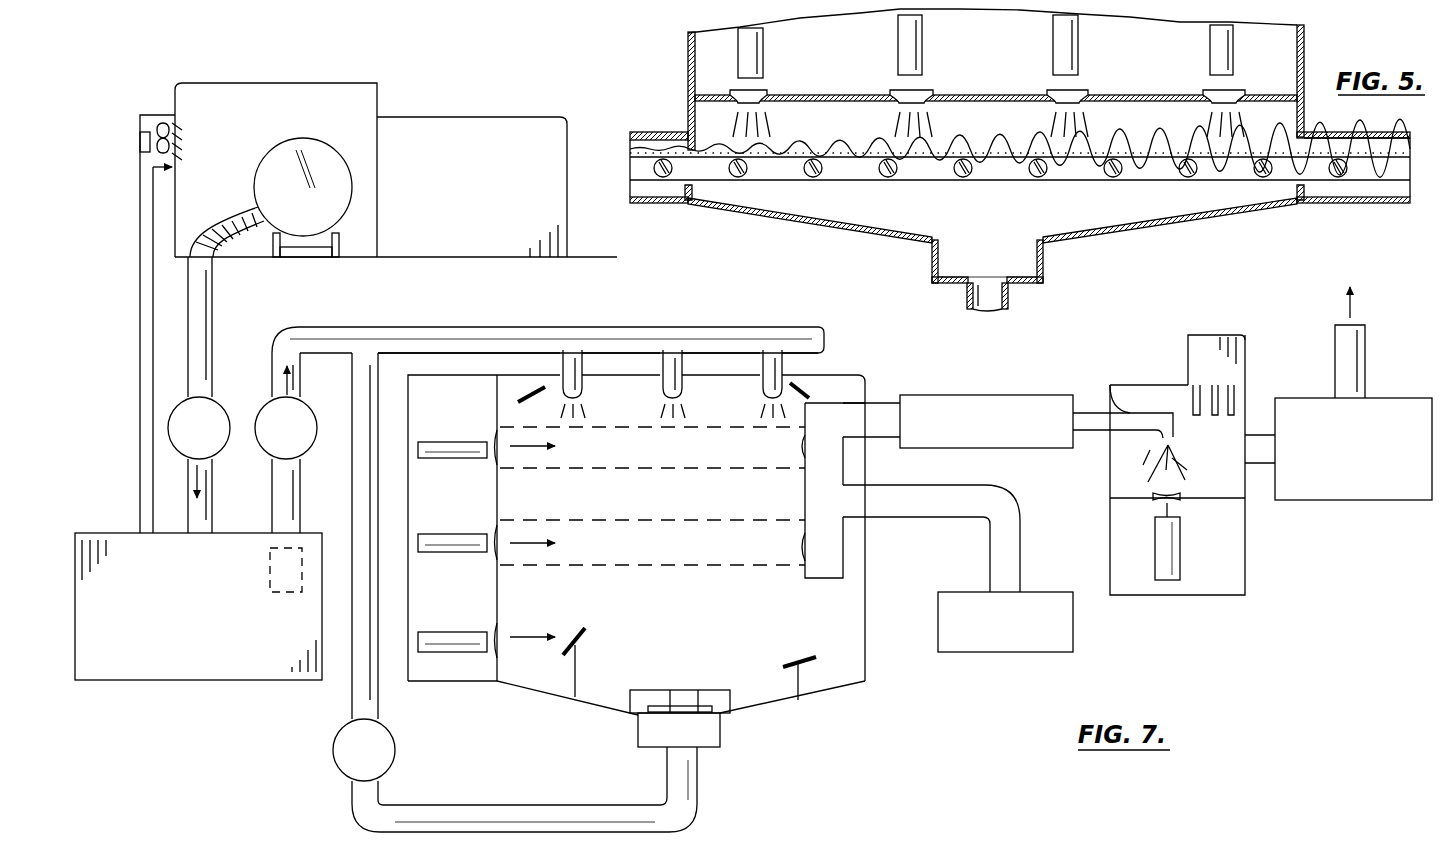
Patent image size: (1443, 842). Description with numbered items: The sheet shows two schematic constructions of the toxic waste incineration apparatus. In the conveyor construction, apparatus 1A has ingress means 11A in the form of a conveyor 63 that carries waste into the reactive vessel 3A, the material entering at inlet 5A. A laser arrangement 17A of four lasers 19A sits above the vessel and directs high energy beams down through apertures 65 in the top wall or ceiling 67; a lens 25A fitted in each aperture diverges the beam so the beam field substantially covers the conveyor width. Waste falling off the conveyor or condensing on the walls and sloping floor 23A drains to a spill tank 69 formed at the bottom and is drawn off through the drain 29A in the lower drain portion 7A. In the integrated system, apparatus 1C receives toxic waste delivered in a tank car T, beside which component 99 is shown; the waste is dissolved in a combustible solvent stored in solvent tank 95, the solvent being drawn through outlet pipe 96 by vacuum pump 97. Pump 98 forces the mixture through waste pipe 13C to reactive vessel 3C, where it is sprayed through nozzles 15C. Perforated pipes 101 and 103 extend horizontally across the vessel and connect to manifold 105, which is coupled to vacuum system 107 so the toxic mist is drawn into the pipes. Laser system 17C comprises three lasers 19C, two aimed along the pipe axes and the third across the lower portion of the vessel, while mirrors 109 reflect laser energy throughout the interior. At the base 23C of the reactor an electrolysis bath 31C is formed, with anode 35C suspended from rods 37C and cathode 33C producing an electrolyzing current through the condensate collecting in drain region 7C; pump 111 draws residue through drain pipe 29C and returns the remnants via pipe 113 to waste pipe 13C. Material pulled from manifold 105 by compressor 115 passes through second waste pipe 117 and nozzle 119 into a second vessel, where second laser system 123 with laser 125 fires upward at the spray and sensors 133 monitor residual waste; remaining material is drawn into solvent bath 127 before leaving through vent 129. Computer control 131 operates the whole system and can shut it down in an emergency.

In FIG. 5, the housing 17A is at (722, 47).
In FIG. 5, the lasers 19A is at (764, 48).
In FIG. 5, the lens 25A is at (767, 92).
In FIG. 5, the top wall or ceiling 67 is at (817, 95).
In FIG. 5, the apertures 65 is at (1048, 92).
In FIG. 5, the conveyor belt 63 is at (1237, 178).
In FIG. 5, the inlet pipe 5A is at (654, 132).
In FIG. 5, the ingress means 11A is at (1128, 192).
In FIG. 5, the hopper 23A is at (842, 222).
In FIG. 5, the spill tank 69 is at (957, 258).
In FIG. 5, the drain outlet 29A is at (1008, 304).
In FIG. 5, the reactive vessel 3A is at (991, 222).
In FIG. 5, the apparatus 1A is at (838, 257).
In FIG. 5, the drain 7A is at (947, 294).
In FIG. 7, the computer control 131 is at (461, 116).
In FIG. 7, the fan 99 is at (153, 112).
In FIG. 7, the tank car T is at (314, 143).
In FIG. 7, the outlet pipe 96 is at (214, 222).
In FIG. 7, the vacuum pump 97 is at (220, 400).
In FIG. 7, the pump 98 is at (260, 454).
In FIG. 7, the solvent tank 95 is at (147, 680).
In FIG. 7, the apparatus 1C is at (242, 750).
In FIG. 7, the waste pipe 13C is at (632, 333).
In FIG. 7, the pipe 113 is at (350, 700).
In FIG. 7, the pump 111 is at (342, 770).
In FIG. 7, the drain pipe 29C is at (482, 806).
In FIG. 7, the laser system 17C is at (447, 383).
In FIG. 7, the hopper 23C is at (600, 697).
In FIG. 7, the nozzles 15C is at (583, 395).
In FIG. 7, the lasers 19C is at (456, 460).
In FIG. 7, the perforated pipe 101 is at (603, 480).
In FIG. 7, the perforated pipe 103 is at (714, 520).
In FIG. 7, the mirrors 109 is at (522, 398).
In FIG. 7, the reactive vessel 3C is at (686, 626).
In FIG. 7, the manifold 105 is at (798, 485).
In FIG. 7, the compressor 115 is at (1005, 394).
In FIG. 7, the vacuum system 107 is at (1032, 553).
In FIG. 7, the second waste pipe 117 is at (1133, 405).
In FIG. 7, the second laser system 123 is at (1216, 580).
In FIG. 7, the gas and toxic material sensors 133 is at (1213, 336).
In FIG. 7, the nozzle 119 is at (1183, 455).
In FIG. 7, the laser 125 is at (1160, 583).
In FIG. 7, the solvent bath 127 is at (1362, 500).
In FIG. 7, the vent 129 is at (1366, 362).
In FIG. 7, the rods 37C is at (696, 689).
In FIG. 7, the electrolysis bath 31C is at (712, 729).
In FIG. 7, the anode 35C is at (650, 714).
In FIG. 7, the cathode 33C is at (646, 748).
In FIG. 7, the drain assembly 7C is at (735, 776).